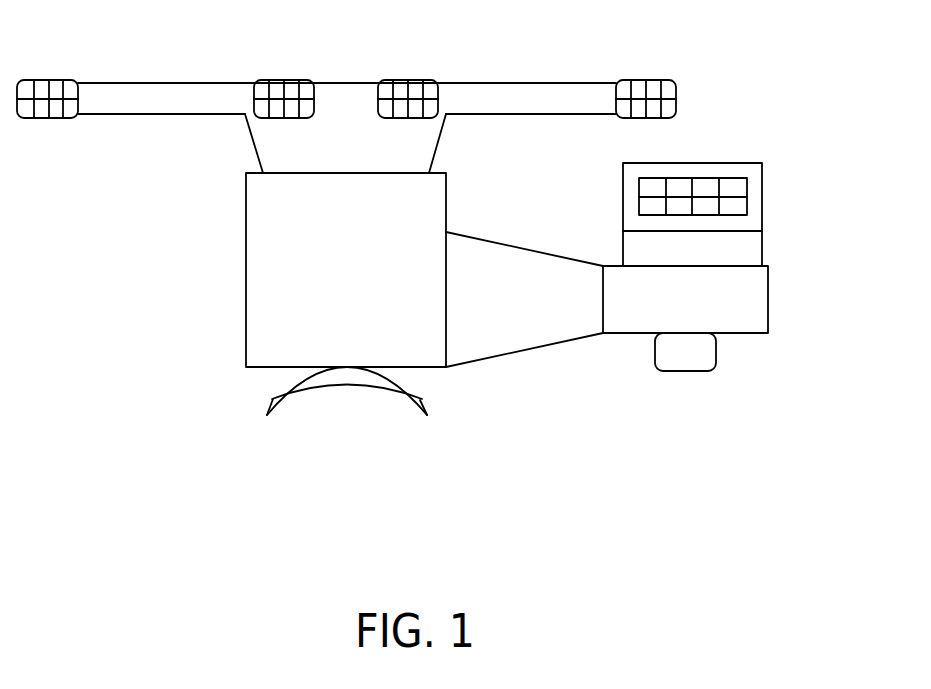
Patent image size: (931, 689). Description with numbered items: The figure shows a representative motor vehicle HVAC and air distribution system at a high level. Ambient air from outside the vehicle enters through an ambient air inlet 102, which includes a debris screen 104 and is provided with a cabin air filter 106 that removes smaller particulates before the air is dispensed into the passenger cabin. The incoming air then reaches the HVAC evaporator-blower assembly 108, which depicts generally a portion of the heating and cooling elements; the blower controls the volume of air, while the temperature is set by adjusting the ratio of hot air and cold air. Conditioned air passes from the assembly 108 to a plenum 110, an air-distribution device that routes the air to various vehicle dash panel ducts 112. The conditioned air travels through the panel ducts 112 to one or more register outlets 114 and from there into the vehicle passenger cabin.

The ambient air inlet 102 is at (762, 173).
The debris screen 104 is at (747, 207).
The cabin air filter 106 is at (762, 248).
The HVAC evaporator-blower assembly 108 is at (525, 355).
The plenum 110 is at (246, 270).
The dash panel ducts 112 is at (265, 142).
The register outlets 114 is at (40, 79).